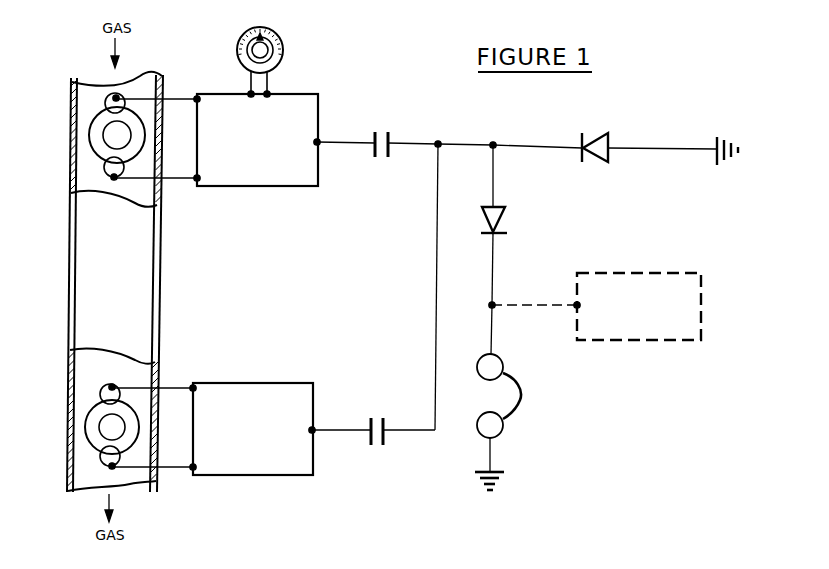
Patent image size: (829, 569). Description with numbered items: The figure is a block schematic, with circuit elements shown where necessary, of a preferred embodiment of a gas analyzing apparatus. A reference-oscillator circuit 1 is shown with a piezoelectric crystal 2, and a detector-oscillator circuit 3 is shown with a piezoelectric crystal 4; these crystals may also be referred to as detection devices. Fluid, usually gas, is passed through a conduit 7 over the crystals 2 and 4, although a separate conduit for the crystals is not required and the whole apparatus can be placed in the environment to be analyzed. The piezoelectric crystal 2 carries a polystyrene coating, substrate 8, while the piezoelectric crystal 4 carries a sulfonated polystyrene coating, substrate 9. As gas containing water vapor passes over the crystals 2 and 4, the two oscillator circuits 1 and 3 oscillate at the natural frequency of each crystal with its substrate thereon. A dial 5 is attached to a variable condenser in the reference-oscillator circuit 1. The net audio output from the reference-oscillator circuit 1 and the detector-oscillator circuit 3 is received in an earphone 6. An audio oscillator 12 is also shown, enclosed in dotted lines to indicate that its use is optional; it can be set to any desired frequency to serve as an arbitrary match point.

The reference-oscillator circuit 1 is at (267, 175).
The piezoelectric crystal 2 is at (92, 134).
The detector-oscillator circuit 3 is at (262, 393).
The piezoelectric crystal 4 is at (88, 420).
The dial 5 is at (284, 45).
The earphone 6 is at (521, 393).
The conduit 7 is at (147, 268).
The substrate 8 is at (105, 142).
The substrate 9 is at (100, 430).
The audio oscillator 12 is at (700, 299).